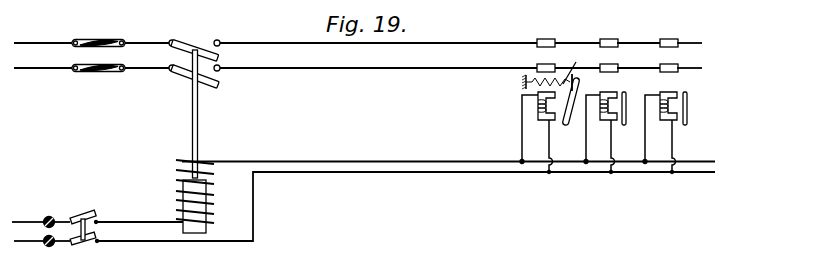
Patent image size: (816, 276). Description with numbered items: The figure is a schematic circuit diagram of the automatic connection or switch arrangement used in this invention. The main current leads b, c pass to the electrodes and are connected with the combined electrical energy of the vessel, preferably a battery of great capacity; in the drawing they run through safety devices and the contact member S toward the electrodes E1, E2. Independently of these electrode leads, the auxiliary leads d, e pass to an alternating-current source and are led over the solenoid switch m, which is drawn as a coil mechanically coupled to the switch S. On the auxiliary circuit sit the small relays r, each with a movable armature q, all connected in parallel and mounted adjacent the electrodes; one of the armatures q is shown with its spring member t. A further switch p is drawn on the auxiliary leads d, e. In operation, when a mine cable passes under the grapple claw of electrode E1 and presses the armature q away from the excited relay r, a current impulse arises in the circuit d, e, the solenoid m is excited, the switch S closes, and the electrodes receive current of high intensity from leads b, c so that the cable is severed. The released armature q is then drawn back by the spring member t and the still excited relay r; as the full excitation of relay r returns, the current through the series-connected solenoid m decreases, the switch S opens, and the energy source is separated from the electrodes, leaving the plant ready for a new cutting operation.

The main current lead b is at (358, 36).
The main current lead c is at (358, 75).
The contact member (switch) S is at (194, 99).
The electrode E1 is at (607, 33).
The electrode E2 is at (607, 62).
The spring member t is at (549, 70).
The relay r is at (537, 133).
The movable armature q is at (571, 108).
The solenoid switch m is at (180, 196).
The double-pole switch p is at (84, 219).
The auxiliary lead d is at (363, 185).
The auxiliary lead e is at (364, 213).